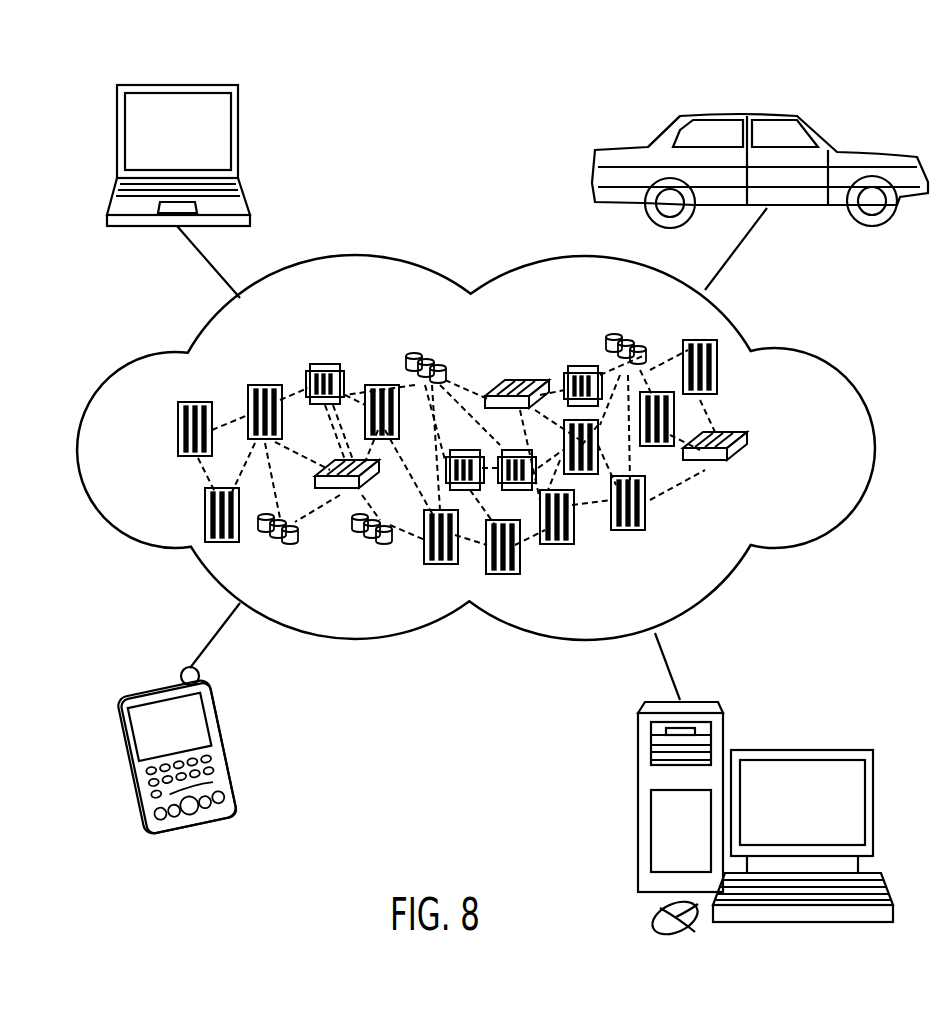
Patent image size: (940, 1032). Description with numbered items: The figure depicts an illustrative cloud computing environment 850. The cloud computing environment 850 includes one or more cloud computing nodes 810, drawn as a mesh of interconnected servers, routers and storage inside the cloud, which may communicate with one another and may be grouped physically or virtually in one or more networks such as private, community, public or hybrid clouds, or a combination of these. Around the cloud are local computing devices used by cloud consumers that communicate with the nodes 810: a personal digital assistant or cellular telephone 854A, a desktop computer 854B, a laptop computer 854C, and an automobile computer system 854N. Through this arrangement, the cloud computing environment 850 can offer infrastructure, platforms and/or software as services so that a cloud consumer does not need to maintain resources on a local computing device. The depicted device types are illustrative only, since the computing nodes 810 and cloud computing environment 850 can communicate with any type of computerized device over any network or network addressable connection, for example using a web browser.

The cloud computing environment 850 is at (815, 355).
The cloud computing nodes 810 is at (762, 450).
The personal digital assistant (PDA) or cellular telephone 854A is at (157, 688).
The desktop computer 854B is at (802, 748).
The laptop computer 854C is at (177, 85).
The automobile computer system 854N is at (738, 113).